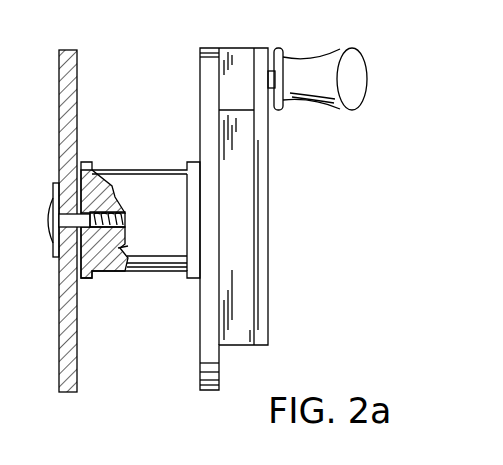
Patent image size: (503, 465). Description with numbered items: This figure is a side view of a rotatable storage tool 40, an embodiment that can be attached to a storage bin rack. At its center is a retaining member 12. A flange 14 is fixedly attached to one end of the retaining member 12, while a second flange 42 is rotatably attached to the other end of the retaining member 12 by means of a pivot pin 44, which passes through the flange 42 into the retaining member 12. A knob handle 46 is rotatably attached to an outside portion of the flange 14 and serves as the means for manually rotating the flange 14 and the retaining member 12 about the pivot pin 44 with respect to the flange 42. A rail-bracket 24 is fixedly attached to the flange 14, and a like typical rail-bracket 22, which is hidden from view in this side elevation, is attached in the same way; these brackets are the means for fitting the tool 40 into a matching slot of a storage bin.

The retaining member 12 is at (149, 168).
The flange 14 is at (210, 392).
The rail-bracket 22 is at (0, 425).
The rail-bracket 24 is at (272, 293).
The rotatable storage tool 40 is at (335, 215).
The flange 42 is at (65, 48).
The pivot pin 44 is at (46, 217).
The knob handle 46 is at (333, 48).